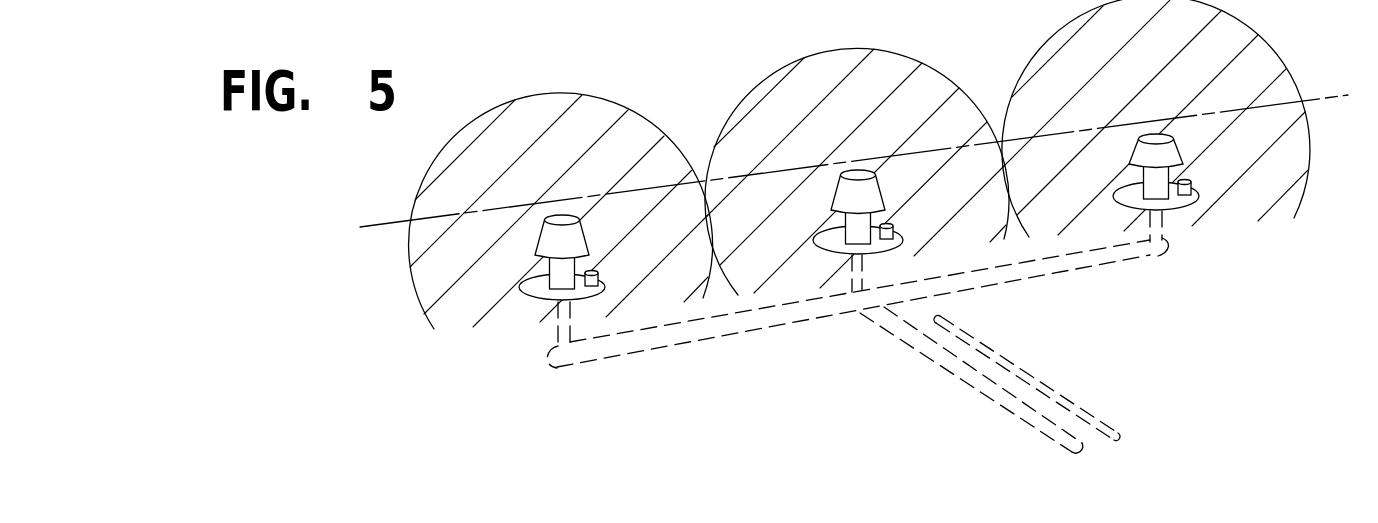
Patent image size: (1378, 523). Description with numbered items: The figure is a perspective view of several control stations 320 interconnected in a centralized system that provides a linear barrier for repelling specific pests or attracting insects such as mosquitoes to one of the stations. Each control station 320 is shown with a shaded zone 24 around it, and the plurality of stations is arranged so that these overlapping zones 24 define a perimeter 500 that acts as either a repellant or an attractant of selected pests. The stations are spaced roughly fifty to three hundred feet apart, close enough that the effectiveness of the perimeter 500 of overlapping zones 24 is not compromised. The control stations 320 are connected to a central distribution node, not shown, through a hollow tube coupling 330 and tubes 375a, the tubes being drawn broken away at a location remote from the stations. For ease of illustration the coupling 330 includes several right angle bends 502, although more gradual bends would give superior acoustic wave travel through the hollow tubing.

The overlapping zones 24 is at (510, 100).
The control station 320 is at (565, 221).
The perimeter 500 is at (375, 226).
The right angle bends 502 is at (556, 349).
The hollow tube coupling 330 is at (609, 347).
The tubes 375a is at (1080, 405).